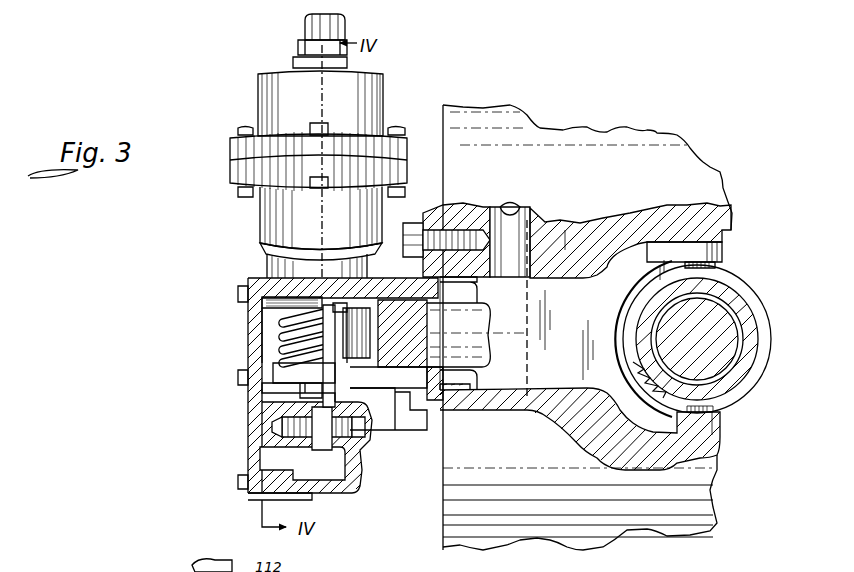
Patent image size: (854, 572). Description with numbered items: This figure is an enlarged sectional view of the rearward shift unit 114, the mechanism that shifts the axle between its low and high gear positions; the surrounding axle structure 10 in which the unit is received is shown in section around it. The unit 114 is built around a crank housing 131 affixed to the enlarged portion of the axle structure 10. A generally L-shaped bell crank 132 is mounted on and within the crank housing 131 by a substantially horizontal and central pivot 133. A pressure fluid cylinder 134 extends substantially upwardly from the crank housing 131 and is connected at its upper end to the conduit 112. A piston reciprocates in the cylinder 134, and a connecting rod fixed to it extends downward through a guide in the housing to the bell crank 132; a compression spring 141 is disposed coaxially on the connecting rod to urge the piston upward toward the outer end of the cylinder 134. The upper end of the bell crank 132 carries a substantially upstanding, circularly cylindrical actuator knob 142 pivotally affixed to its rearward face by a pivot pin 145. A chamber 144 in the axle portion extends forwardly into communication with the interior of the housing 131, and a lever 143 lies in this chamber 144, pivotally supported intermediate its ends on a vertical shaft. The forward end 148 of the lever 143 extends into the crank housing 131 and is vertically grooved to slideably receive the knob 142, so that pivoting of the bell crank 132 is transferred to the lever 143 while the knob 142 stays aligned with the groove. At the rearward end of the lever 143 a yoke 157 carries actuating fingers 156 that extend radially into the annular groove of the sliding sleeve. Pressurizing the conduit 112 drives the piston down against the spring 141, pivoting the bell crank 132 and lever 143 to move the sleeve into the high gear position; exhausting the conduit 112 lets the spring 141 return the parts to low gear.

The engine block body 10 is at (520, 535).
The conduit 112 is at (305, 30).
The rearward shift unit 114 is at (174, 288).
The crank housing 131 is at (350, 493).
The bell crank 132 is at (302, 464).
The pivot 133 is at (362, 445).
The pressure fluid cylinder 134 is at (268, 212).
The compression spring 141 is at (321, 313).
The actuator knob 142 is at (360, 327).
The lever 143 is at (672, 339).
The chamber 144 is at (453, 392).
The pivot pin 145 is at (338, 335).
The forward end of the lever 148 is at (477, 335).
The actuating fingers 156 is at (716, 266).
The yoke 157 is at (723, 245).